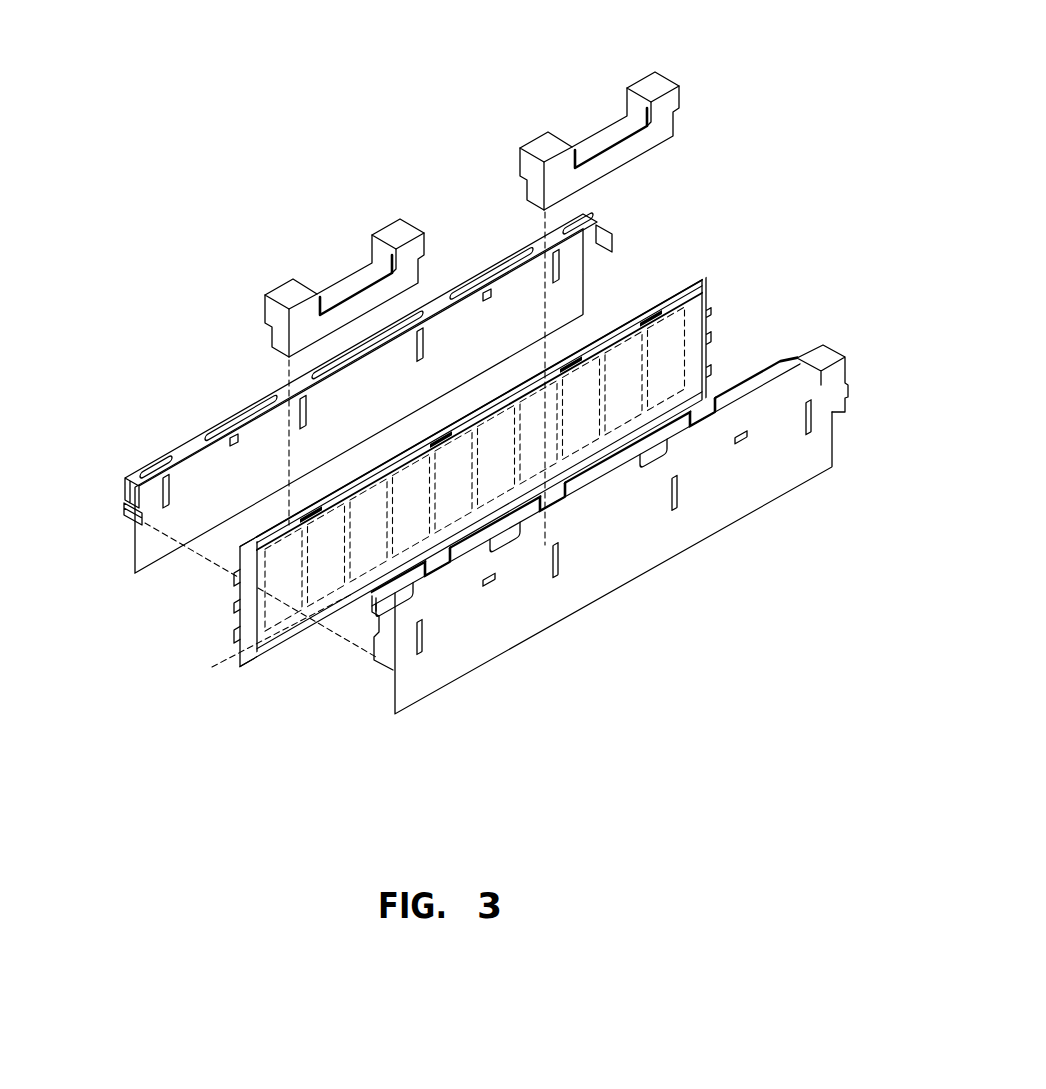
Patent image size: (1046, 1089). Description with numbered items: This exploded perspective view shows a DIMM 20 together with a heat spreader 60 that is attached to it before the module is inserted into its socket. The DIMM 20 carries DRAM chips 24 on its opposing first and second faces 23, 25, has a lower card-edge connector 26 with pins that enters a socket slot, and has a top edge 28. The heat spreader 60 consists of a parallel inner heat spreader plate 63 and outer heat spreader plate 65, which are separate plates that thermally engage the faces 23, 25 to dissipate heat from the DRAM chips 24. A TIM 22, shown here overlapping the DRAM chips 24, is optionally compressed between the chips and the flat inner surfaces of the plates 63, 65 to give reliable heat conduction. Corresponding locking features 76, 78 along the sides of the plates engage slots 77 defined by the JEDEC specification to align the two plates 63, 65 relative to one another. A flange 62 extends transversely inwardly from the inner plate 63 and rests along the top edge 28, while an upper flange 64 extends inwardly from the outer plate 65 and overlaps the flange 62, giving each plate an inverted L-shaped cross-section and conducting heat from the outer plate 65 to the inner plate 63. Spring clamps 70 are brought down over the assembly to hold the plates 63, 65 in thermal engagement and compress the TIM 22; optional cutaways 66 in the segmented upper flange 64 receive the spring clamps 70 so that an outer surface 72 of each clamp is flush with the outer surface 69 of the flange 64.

The DIMM 20 is at (467, 476).
The TIM 22 is at (232, 410).
The first face 23 is at (604, 326).
The DRAM chips 24 is at (242, 653).
The second face 25 is at (707, 322).
The card-edge connector 26 is at (290, 652).
The top edge 28 is at (649, 304).
The heat spreader 60 is at (453, 433).
The flange 62 is at (226, 440).
The inner heat spreader plate 63 is at (133, 556).
The upper flange 64 is at (548, 505).
The outer heat spreader plate 65 is at (578, 501).
The cutaways 66 is at (535, 527).
The outer surface 69 is at (739, 400).
The spring clamps 70 is at (600, 126).
The outer surface 72 is at (392, 226).
The locking feature 76 is at (120, 510).
The slots 77 is at (230, 578).
The locking feature 78 is at (372, 662).